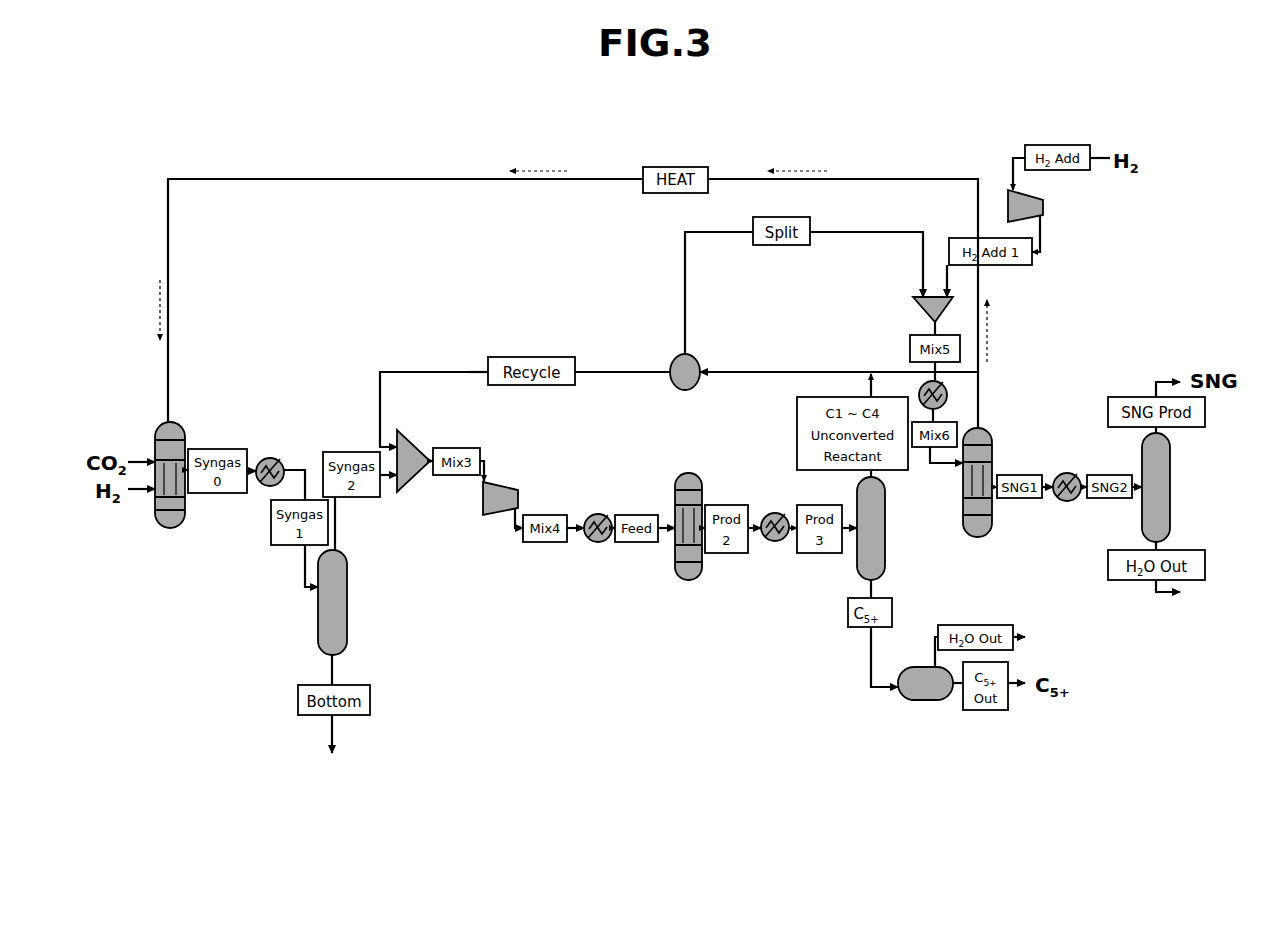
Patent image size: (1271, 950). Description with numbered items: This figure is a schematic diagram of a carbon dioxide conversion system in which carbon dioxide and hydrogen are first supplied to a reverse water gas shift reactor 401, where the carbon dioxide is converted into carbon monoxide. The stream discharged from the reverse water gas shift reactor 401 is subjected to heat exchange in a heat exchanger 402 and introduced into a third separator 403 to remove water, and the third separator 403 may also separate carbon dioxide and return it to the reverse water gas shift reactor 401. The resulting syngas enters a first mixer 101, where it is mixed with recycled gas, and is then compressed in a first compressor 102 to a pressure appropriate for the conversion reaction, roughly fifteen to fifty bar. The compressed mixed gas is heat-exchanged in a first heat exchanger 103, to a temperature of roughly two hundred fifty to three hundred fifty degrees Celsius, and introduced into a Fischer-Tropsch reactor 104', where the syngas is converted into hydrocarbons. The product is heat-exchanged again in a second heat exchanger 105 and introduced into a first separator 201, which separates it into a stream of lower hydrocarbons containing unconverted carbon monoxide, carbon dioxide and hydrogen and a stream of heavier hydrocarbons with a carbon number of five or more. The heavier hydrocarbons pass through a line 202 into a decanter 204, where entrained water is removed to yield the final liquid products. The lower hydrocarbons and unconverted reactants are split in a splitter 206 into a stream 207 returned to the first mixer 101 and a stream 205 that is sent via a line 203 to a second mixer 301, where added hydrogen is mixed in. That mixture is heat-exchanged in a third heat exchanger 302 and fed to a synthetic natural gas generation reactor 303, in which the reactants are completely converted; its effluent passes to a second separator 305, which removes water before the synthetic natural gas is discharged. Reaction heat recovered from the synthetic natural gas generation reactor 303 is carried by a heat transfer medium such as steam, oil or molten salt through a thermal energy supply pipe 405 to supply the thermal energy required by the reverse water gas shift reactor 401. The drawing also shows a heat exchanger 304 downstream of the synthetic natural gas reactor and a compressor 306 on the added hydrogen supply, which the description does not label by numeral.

The first mixer 101 is at (412, 486).
The first compressor 102 is at (495, 518).
The first heat exchanger 103 is at (595, 548).
The Fischer-Tropsch reactor 104' is at (652, 551).
The second heat exchanger 105 is at (775, 545).
The first separator 201 is at (855, 575).
The line 202 is at (866, 642).
The line 203 is at (805, 376).
The decanter 204 is at (915, 702).
The stream 205 is at (822, 240).
The splitter 206 is at (668, 360).
The stream 207 is at (465, 362).
The second mixer 301 is at (910, 318).
The third heat exchanger 302 is at (914, 388).
The synthetic natural gas generation reactor 303 is at (995, 528).
The SNG heat exchanger 304 is at (1068, 468).
The second separator 305 is at (1173, 496).
The hydrogen compressor 306 is at (1047, 208).
The reverse water gas shift reactor 401 is at (152, 522).
The heat exchanger 402 is at (273, 455).
The third separator 403 is at (316, 645).
The thermal energy supply pipe 405 is at (478, 190).